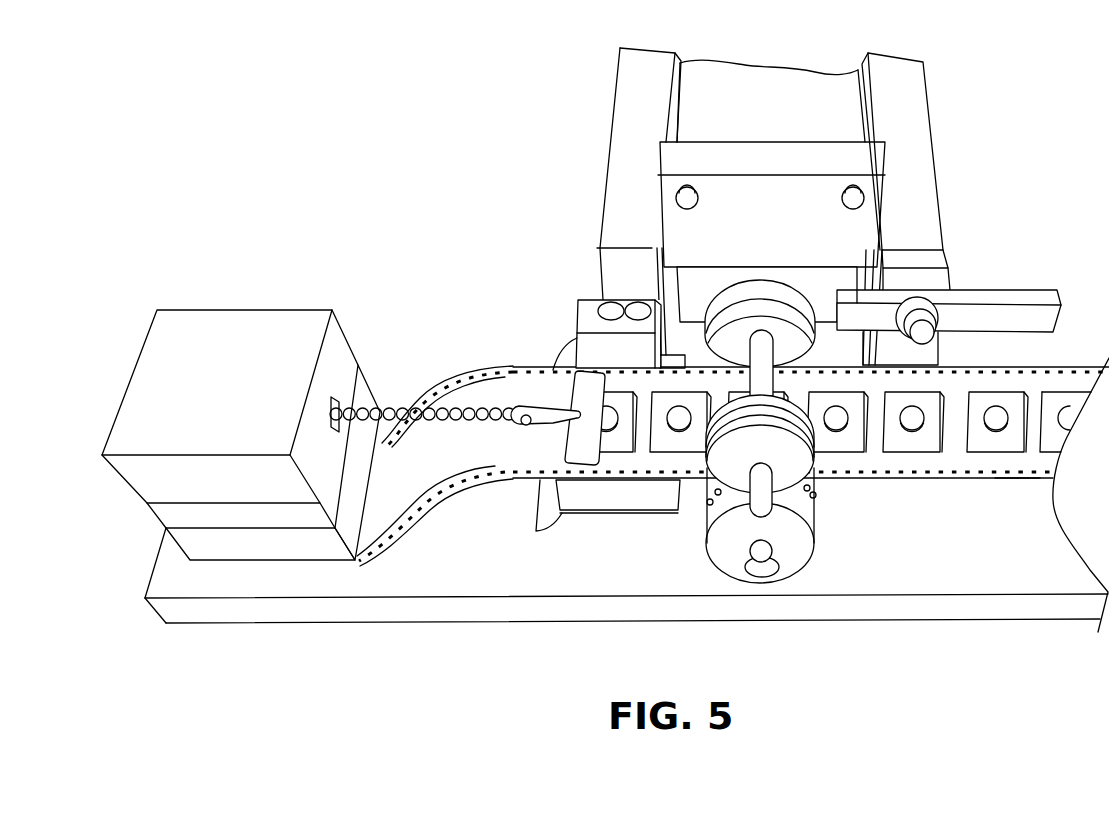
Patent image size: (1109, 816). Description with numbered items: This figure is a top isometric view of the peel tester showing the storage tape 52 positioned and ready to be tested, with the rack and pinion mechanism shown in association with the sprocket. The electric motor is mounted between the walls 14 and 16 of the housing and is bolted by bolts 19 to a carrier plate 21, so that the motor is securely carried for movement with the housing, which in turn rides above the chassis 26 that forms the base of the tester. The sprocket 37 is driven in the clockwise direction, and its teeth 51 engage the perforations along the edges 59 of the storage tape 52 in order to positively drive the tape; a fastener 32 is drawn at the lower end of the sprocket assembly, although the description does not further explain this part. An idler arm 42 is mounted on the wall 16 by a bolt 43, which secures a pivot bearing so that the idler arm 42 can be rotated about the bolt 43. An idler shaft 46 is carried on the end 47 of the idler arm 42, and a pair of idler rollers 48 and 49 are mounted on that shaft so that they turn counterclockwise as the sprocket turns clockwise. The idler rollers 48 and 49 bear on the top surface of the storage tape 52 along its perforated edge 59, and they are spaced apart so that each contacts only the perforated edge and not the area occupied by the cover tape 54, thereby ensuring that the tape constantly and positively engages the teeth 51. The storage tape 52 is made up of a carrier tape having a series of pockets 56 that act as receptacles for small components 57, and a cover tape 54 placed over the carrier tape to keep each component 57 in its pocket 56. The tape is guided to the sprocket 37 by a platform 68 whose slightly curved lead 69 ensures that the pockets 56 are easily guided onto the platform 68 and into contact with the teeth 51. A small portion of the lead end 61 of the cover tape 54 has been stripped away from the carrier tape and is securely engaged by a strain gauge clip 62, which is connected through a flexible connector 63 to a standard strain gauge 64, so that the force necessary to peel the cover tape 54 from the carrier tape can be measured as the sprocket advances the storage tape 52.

The wall 14 is at (623, 159).
The wall 16 is at (913, 125).
The bolts 19 is at (697, 196).
The carrier plate 21 is at (745, 157).
The chassis 26 is at (1030, 607).
The fastener stud 32 is at (755, 567).
The sprocket 37 is at (792, 555).
The idler arm 42 is at (1002, 297).
The bolt 43 is at (923, 335).
The idler shaft 46 is at (763, 487).
The end of idler arm 47 is at (698, 273).
The idler roller 48 is at (760, 280).
The idler roller 49 is at (794, 472).
The teeth 51 is at (706, 502).
The storage tape 52 is at (1080, 375).
The cover tape 54 is at (432, 452).
The pockets 56 is at (1010, 441).
The components 57 is at (993, 422).
The edges 59 is at (1017, 478).
The lead end 61 is at (578, 392).
The strain gauge clip 62 is at (533, 405).
The flexible connector 63 is at (399, 408).
The strain gauge 64 is at (178, 320).
The platform 68 is at (595, 495).
The curved lead 69 is at (543, 510).